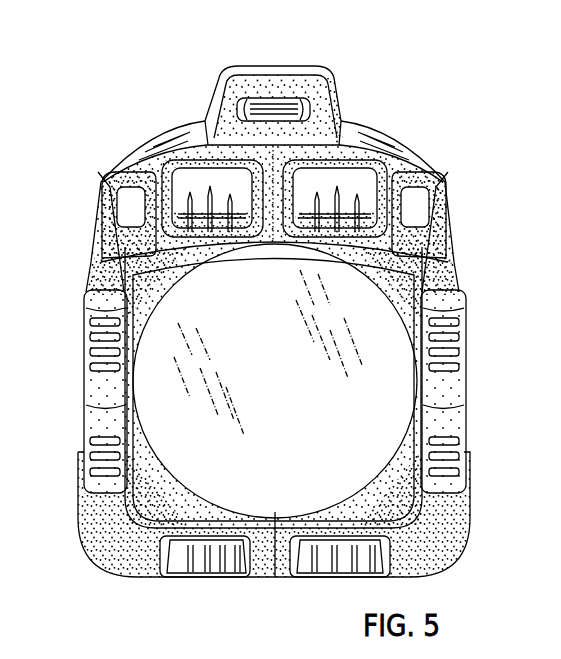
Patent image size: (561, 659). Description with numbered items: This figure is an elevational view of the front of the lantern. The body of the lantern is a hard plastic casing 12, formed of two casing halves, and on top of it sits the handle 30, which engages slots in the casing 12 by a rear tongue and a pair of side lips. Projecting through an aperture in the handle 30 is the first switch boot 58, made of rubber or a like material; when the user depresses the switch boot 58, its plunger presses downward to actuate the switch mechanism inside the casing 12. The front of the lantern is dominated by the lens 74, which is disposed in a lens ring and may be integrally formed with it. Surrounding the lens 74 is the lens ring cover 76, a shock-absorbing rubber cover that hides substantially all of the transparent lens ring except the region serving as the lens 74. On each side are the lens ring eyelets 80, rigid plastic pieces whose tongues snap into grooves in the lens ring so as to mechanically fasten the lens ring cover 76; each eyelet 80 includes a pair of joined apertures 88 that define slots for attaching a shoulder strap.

The casing 12 is at (363, 130).
The handle 30 is at (277, 65).
The first switch boot 58 is at (284, 105).
The lens 74 is at (388, 375).
The lens ring cover 76 is at (450, 187).
The lens ring eyelets 80 is at (112, 256).
The joined apertures 88 is at (120, 190).